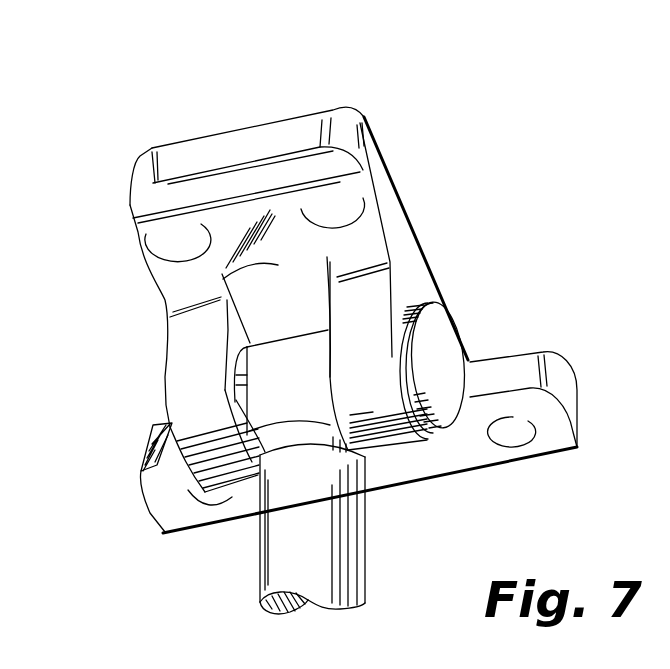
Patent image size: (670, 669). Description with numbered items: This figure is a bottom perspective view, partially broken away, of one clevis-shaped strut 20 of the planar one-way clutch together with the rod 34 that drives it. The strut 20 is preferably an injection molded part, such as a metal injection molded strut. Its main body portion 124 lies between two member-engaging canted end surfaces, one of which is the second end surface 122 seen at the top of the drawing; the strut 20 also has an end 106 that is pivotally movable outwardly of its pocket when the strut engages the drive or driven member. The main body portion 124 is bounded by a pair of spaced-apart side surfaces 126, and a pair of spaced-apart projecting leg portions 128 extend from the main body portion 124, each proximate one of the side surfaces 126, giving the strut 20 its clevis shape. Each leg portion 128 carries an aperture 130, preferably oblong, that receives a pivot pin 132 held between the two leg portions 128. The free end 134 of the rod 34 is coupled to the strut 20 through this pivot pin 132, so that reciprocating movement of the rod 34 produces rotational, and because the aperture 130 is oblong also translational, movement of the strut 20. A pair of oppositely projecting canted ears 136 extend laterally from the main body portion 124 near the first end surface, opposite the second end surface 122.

The strut 20 is at (418, 224).
The first rod 34 is at (365, 540).
The end 106 is at (353, 112).
The second end surface 122 is at (243, 141).
The main body portion 124 is at (230, 284).
The side surfaces 126 is at (377, 183).
The leg portions 128 is at (365, 368).
The aperture 130 is at (170, 428).
The pivot pin 132 is at (453, 362).
The free end 134 is at (283, 395).
The canted ears 136 is at (168, 502).